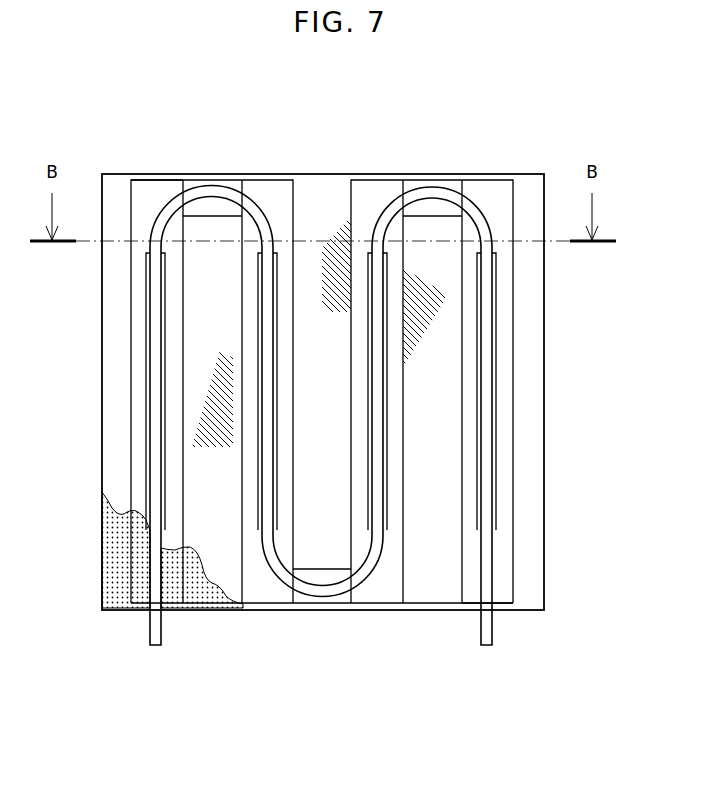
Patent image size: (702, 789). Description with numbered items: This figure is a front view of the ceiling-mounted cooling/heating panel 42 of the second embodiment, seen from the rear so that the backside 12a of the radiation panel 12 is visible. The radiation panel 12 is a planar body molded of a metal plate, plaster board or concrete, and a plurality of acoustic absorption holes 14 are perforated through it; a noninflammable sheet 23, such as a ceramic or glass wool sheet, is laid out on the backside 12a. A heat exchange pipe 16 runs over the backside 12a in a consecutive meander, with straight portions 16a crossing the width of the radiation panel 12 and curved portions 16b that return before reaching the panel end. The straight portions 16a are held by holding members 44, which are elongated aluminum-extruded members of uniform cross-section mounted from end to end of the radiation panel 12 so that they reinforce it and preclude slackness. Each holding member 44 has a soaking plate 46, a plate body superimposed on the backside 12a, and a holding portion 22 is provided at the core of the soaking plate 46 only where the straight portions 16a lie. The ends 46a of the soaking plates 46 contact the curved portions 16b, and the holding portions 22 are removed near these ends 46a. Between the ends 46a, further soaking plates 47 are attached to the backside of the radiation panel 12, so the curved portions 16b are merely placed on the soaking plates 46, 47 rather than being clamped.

The radiation panel 12 is at (318, 197).
The backside of the radiation panel 12a is at (530, 433).
The acoustic absorption holes 14 is at (125, 573).
The heat exchange pipe 16 is at (488, 627).
The straight portions 16a is at (155, 443).
The curved portions 16b is at (198, 187).
The holding portions 22 is at (497, 477).
The noninflammable sheet 23 is at (212, 543).
The ceiling-mounted cooling/heating panel 42 is at (528, 162).
The holding members 44 is at (127, 378).
The soaking plates 46 is at (137, 320).
The ends of the soaking plates 46a is at (157, 187).
The soaking plates 47 is at (237, 187).